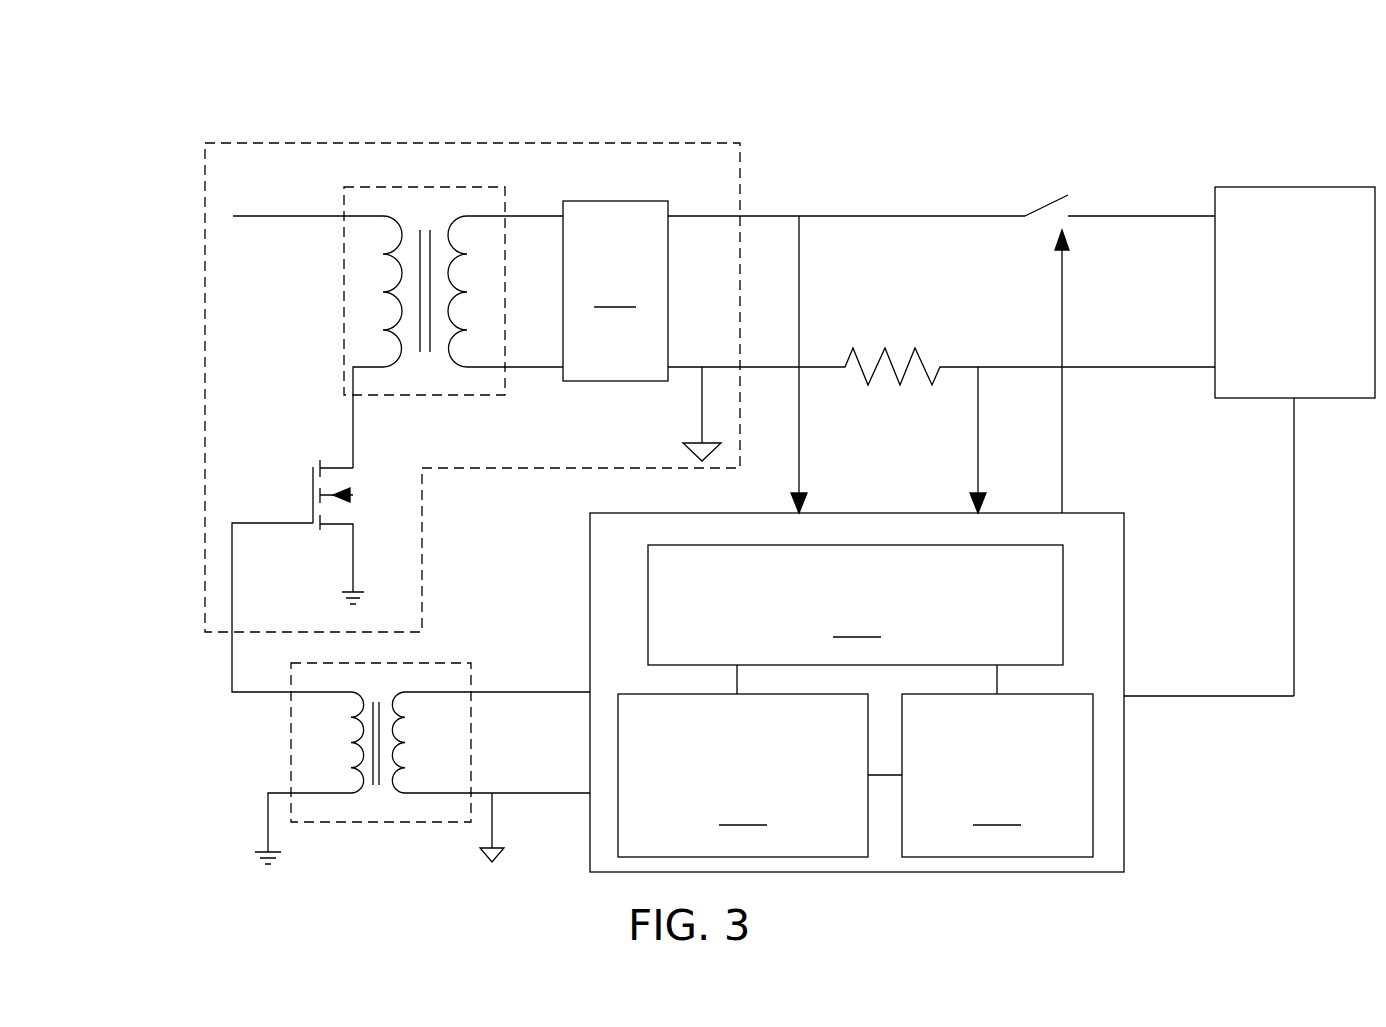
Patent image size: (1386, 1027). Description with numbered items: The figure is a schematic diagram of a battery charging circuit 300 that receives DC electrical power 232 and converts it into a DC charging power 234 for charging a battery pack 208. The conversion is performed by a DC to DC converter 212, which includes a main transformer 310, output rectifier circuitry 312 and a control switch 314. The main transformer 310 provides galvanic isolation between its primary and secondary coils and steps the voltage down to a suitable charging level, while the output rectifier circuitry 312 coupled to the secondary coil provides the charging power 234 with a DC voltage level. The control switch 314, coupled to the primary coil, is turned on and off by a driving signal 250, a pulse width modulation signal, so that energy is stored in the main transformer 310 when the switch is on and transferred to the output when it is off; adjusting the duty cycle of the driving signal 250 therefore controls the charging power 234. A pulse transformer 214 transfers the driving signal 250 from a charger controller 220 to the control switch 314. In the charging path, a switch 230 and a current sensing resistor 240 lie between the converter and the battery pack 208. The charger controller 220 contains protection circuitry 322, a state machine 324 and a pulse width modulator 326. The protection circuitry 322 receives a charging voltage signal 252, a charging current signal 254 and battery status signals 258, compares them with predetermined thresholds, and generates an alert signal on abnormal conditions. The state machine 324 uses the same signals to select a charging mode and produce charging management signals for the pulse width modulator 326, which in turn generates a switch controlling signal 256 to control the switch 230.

The battery charging circuit 300 is at (178, 138).
The DC to DC converter 212 is at (742, 193).
The DC electrical power 232 is at (310, 216).
The main transformer 310 is at (344, 305).
The output rectifier circuitry 312 is at (642, 331).
The control switch 314 is at (338, 492).
The DC charging power 234 is at (860, 216).
The switch 230 is at (1068, 195).
The battery pack 208 is at (1295, 441).
The current sensing resistor 240 is at (914, 348).
The charging voltage signal 252 is at (799, 448).
The charging current signal 254 is at (978, 448).
The switch controlling signal 256 is at (1062, 312).
The charger controller 220 is at (896, 692).
The protection circuitry 322 is at (855, 605).
The pulse width modulator 326 is at (743, 775).
The state machine 324 is at (997, 775).
The battery status signals 258 is at (1136, 694).
The driving signal 250 is at (495, 692).
The pulse transformer 214 is at (291, 760).